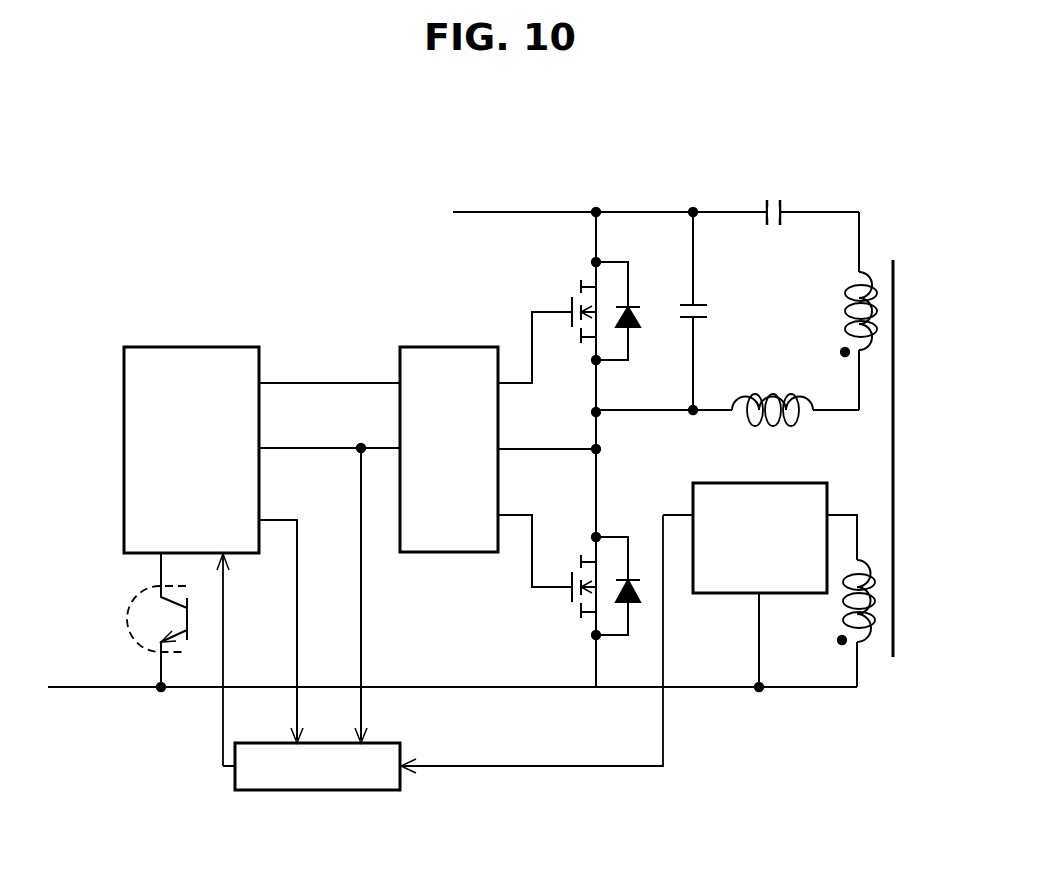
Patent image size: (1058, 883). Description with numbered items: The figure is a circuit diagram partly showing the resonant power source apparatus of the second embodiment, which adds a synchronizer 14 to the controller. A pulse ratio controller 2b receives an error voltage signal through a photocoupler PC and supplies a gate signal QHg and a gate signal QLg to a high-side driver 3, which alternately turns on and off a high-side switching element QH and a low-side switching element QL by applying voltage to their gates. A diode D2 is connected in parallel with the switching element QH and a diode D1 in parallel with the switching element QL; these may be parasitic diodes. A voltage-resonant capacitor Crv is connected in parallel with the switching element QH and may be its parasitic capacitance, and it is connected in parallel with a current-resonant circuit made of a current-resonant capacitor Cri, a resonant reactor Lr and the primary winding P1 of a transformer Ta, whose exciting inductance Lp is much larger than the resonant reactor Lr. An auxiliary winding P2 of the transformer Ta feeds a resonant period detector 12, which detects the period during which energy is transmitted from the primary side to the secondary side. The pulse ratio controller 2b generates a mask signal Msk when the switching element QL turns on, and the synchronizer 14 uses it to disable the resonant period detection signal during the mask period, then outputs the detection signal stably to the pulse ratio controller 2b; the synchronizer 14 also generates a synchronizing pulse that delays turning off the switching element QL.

The pulse ratio controller 2b is at (192, 347).
The high-side driver 3 is at (446, 347).
The resonant period detector 12 is at (739, 595).
The synchronizer 14 is at (405, 780).
The gate signal to switching element QH QHg is at (297, 383).
The gate signal to switching element QL QLg is at (290, 448).
The mask signal Msk is at (300, 548).
The photocoupler PC is at (135, 620).
The switching element QH is at (547, 327).
The switching element QL is at (547, 596).
The diode D1 is at (620, 568).
The diode D2 is at (630, 299).
The current-resonant capacitor Cri is at (769, 198).
The voltage-resonant capacitor Crv is at (717, 311).
The resonant reactor Lr is at (727, 425).
The exciting inductance Lp is at (841, 311).
The primary winding P1 is at (828, 352).
The auxiliary winding P2 is at (838, 601).
The transformer Ta is at (890, 245).